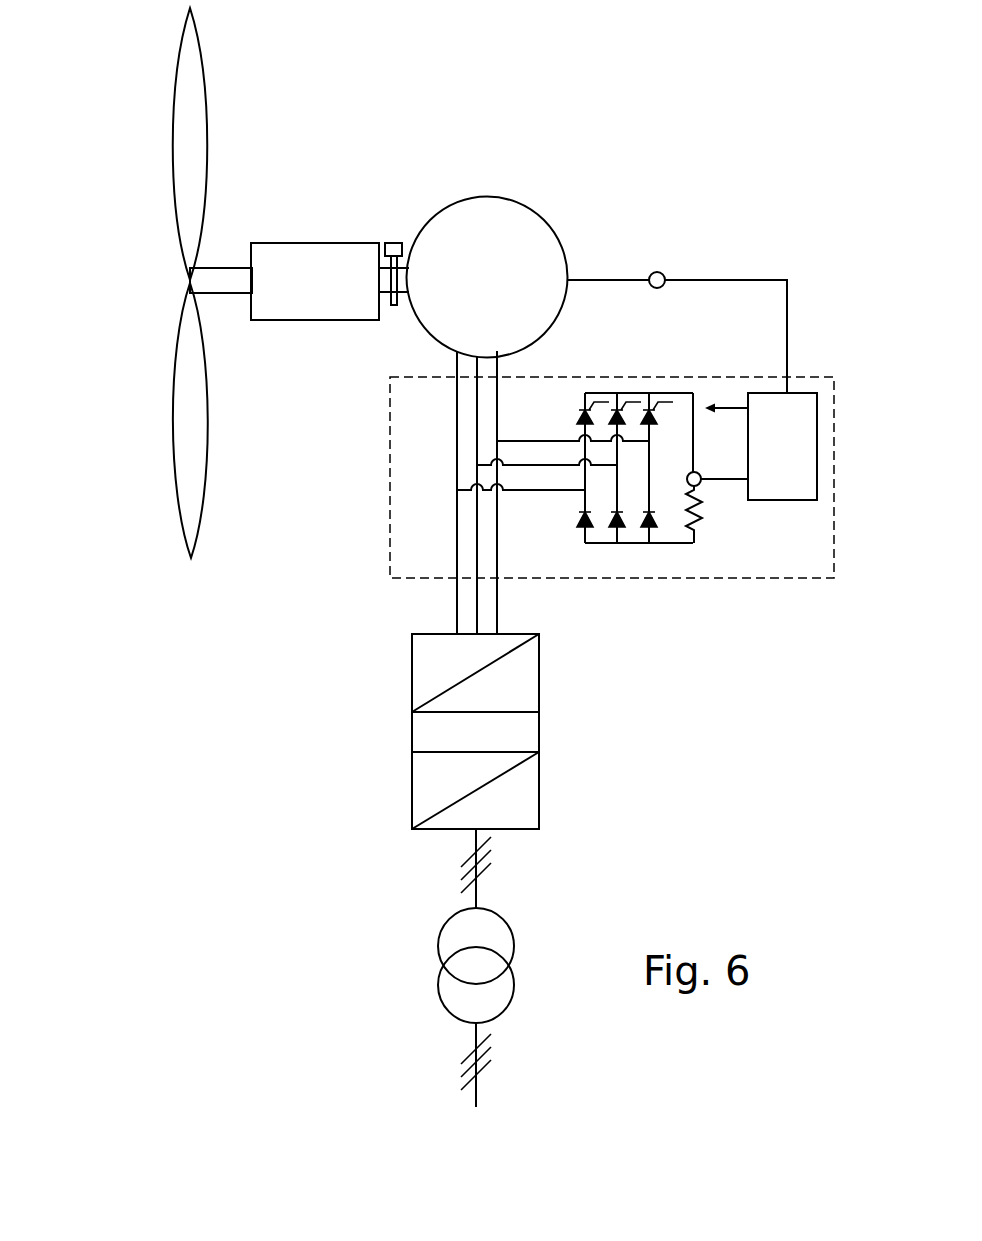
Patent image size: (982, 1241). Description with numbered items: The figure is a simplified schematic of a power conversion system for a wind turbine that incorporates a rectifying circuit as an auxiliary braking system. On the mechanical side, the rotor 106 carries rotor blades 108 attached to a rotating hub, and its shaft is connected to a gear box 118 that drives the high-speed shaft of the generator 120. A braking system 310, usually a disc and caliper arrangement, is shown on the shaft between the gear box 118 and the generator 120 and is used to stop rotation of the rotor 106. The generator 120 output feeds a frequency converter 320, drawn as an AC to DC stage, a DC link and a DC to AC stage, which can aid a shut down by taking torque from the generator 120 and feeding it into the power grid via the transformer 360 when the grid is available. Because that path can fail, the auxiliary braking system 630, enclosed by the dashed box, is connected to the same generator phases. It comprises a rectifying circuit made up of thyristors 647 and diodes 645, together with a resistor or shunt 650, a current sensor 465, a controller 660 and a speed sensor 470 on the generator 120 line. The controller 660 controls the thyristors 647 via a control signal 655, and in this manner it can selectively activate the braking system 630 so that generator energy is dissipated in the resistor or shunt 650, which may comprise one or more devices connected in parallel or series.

The rotor 106 is at (114, 240).
The rotor blades 108 is at (208, 72).
The gear box 118 is at (331, 291).
The braking system 310 is at (396, 243).
The generator 120 is at (504, 292).
The speed sensor 470 is at (658, 272).
The auxiliary braking system 630 is at (392, 447).
The thyristors 647 is at (559, 403).
The diodes 645 is at (619, 564).
The control signal 655 is at (730, 405).
The controller 660 is at (803, 461).
The current sensor 465 is at (702, 485).
The resistor or shunt 650 is at (702, 523).
The frequency converter 320 is at (412, 723).
The transformer 360 is at (438, 955).